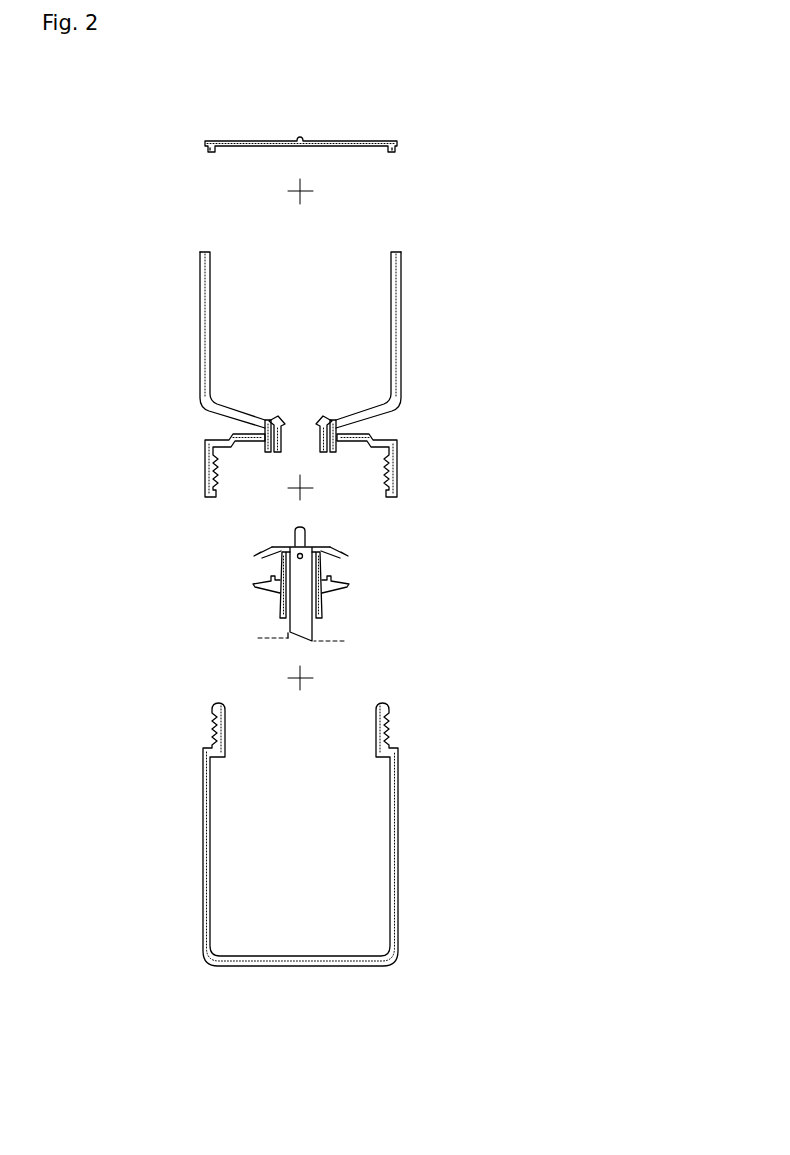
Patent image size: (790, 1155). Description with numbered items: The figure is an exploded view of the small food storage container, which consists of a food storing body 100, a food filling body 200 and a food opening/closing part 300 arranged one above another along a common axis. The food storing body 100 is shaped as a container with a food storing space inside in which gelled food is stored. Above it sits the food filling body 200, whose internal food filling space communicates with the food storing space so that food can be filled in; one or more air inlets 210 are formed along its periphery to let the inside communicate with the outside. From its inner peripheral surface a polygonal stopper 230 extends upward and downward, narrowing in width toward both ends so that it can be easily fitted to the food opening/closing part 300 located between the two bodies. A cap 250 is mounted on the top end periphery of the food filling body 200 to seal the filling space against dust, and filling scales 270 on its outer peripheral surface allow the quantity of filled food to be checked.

The food storing body 100 is at (159, 898).
The food filling body 200 is at (279, 346).
The air inlets 210 is at (260, 433).
The polygonal stopper 230 is at (279, 421).
The cap 250 is at (347, 143).
The filling scales 270 is at (400, 313).
The food opening/closing part 300 is at (177, 542).